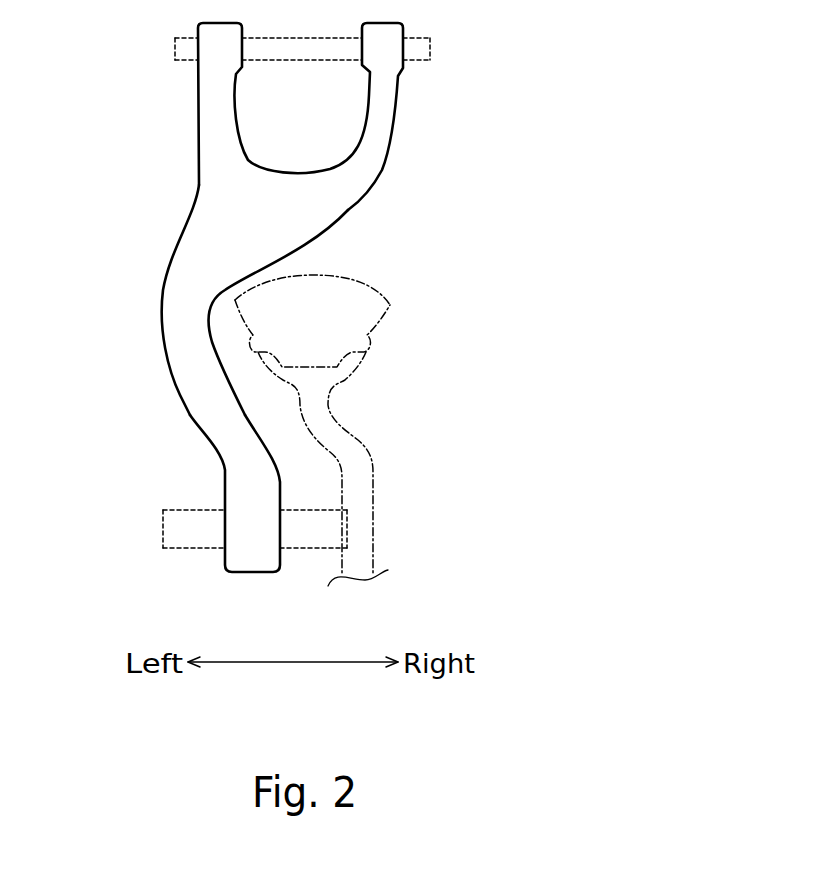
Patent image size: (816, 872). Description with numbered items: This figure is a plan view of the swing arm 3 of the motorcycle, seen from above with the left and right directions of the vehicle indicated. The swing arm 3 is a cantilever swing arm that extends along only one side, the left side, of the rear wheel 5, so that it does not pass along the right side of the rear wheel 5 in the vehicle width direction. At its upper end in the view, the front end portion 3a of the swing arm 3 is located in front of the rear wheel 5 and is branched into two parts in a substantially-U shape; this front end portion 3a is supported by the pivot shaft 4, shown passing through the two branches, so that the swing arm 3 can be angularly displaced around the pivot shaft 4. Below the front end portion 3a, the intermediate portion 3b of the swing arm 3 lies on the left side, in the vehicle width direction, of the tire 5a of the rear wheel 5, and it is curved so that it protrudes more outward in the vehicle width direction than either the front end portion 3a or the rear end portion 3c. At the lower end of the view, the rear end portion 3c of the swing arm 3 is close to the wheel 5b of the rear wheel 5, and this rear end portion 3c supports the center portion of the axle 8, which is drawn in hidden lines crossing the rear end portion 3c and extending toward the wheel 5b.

The swing arm 3 is at (286, 297).
The front end portion 3a is at (212, 80).
The intermediate portion 3b is at (173, 302).
The rear end portion 3c is at (227, 481).
The pivot shaft 4 is at (430, 46).
The rear wheel 5 is at (409, 397).
The tire 5a is at (382, 286).
The wheel 5b is at (375, 478).
The axle 8 is at (163, 530).